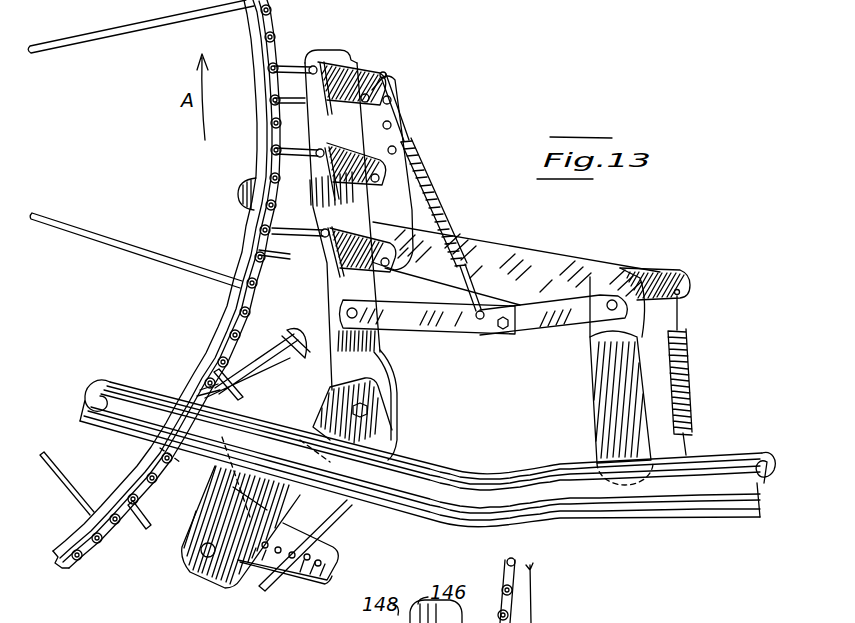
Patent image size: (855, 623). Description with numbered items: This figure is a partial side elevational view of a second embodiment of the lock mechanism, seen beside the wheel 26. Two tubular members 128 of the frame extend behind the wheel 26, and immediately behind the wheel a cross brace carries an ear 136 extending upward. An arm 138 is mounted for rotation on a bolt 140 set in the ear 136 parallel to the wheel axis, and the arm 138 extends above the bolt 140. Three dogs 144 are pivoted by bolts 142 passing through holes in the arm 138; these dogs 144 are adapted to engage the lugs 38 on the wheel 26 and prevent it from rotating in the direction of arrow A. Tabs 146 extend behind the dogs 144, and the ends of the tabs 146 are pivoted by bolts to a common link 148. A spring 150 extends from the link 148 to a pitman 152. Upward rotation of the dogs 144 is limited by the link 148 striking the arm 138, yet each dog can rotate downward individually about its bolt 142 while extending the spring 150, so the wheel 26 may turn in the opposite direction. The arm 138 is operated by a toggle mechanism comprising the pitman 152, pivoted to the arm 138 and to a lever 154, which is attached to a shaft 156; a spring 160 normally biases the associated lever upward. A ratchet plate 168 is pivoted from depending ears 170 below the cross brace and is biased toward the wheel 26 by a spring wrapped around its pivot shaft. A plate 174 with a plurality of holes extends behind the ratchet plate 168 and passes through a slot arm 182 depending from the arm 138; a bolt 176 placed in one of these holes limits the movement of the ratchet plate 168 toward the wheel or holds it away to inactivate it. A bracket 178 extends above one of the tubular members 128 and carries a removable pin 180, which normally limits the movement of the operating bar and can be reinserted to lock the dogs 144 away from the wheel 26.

The wheel 26 is at (220, 333).
The lugs 38 is at (148, 528).
The tubular members 128 is at (547, 480).
The ear 136 is at (325, 420).
The arm 138 is at (333, 288).
The bolt 140 is at (370, 410).
The bolts 142 is at (315, 90).
The dogs 144 is at (292, 64).
The tabs 146 is at (353, 80).
The link 148 is at (382, 115).
The spring 150 is at (437, 191).
The pitman 152 is at (473, 328).
The lever 154 is at (558, 323).
The shaft 156 is at (613, 280).
The spring 160 is at (690, 377).
The ratchet plate 168 is at (207, 495).
The depending ears 170 is at (187, 567).
The plate 174 is at (337, 558).
The bolt 176 is at (315, 576).
The bracket 178 is at (315, 390).
The pin 180 is at (287, 347).
The slot arm 182 is at (328, 533).